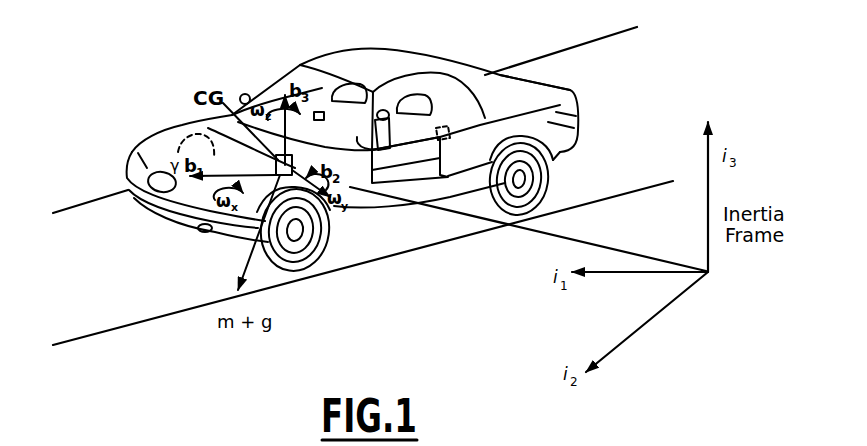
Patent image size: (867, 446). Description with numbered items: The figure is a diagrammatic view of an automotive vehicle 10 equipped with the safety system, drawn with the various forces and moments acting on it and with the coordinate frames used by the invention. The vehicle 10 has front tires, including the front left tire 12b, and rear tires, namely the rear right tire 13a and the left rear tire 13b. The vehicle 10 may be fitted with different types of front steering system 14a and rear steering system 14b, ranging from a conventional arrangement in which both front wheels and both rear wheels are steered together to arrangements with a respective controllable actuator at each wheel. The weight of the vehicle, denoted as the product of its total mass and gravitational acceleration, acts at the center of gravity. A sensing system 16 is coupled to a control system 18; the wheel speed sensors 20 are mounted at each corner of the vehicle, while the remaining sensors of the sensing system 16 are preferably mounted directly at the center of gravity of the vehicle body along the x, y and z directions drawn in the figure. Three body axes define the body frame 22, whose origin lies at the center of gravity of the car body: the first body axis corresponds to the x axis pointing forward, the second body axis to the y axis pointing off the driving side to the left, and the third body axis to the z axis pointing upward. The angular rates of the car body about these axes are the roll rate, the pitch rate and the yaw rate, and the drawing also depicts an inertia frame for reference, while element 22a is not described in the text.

The automotive vehicle 10 is at (376, 52).
The front left tire 12b is at (303, 266).
The rear right tire 13a is at (563, 87).
The left rear tire 13b is at (545, 194).
The front steering system 14a is at (216, 246).
The rear steering system 14b is at (573, 112).
The sensing system 16 is at (319, 118).
The control system 18 is at (443, 128).
The wheel speed sensors 20 is at (333, 226).
The body frame 22 is at (215, 118).
The front end 22a is at (142, 145).